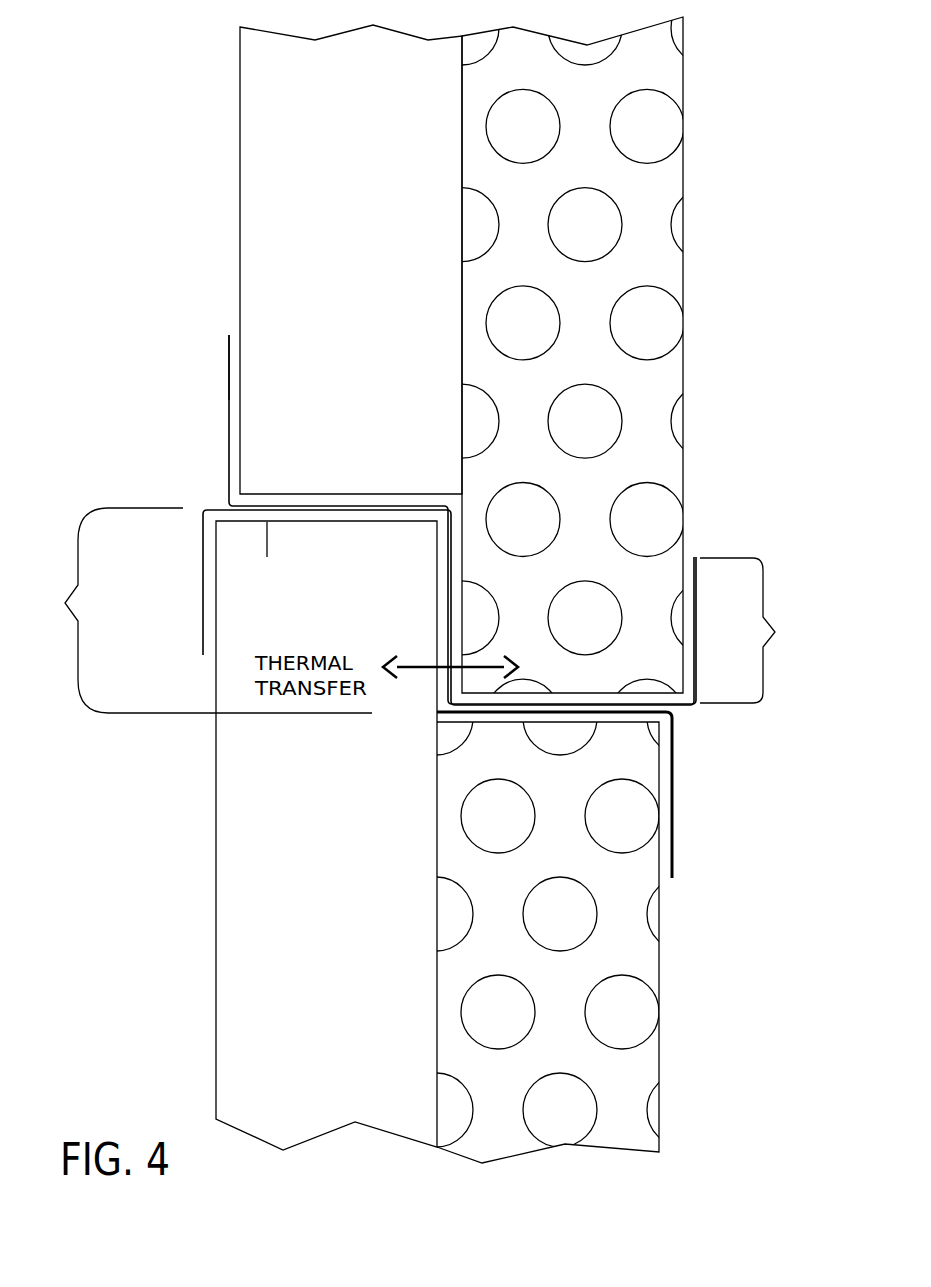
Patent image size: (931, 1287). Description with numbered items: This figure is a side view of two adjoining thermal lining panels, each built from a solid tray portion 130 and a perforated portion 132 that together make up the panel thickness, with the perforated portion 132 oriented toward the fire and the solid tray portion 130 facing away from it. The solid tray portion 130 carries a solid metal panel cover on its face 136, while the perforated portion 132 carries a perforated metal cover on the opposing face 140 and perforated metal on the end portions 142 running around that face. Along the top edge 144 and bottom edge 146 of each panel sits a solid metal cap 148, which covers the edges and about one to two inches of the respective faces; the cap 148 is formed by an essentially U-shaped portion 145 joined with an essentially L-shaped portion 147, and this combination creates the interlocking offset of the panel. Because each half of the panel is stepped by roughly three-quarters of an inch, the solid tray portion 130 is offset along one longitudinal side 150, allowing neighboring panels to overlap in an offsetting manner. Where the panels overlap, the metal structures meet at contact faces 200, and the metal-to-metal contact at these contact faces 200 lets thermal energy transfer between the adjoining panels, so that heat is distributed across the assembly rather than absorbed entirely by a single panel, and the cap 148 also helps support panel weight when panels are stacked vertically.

The solid tray portion 130 is at (285, 213).
The perforated portion 132 is at (653, 183).
The face 136 is at (216, 102).
The opposing face 140 is at (709, 363).
The end portions 142 is at (657, 435).
The top edge 144 is at (267, 557).
The U-shaped portion 145 is at (65, 603).
The bottom edge 146 is at (305, 494).
The L-shaped portion 147 is at (775, 632).
The cap 148 is at (200, 472).
The longitudinal side 150 is at (721, 672).
The contact faces 200 is at (481, 562).